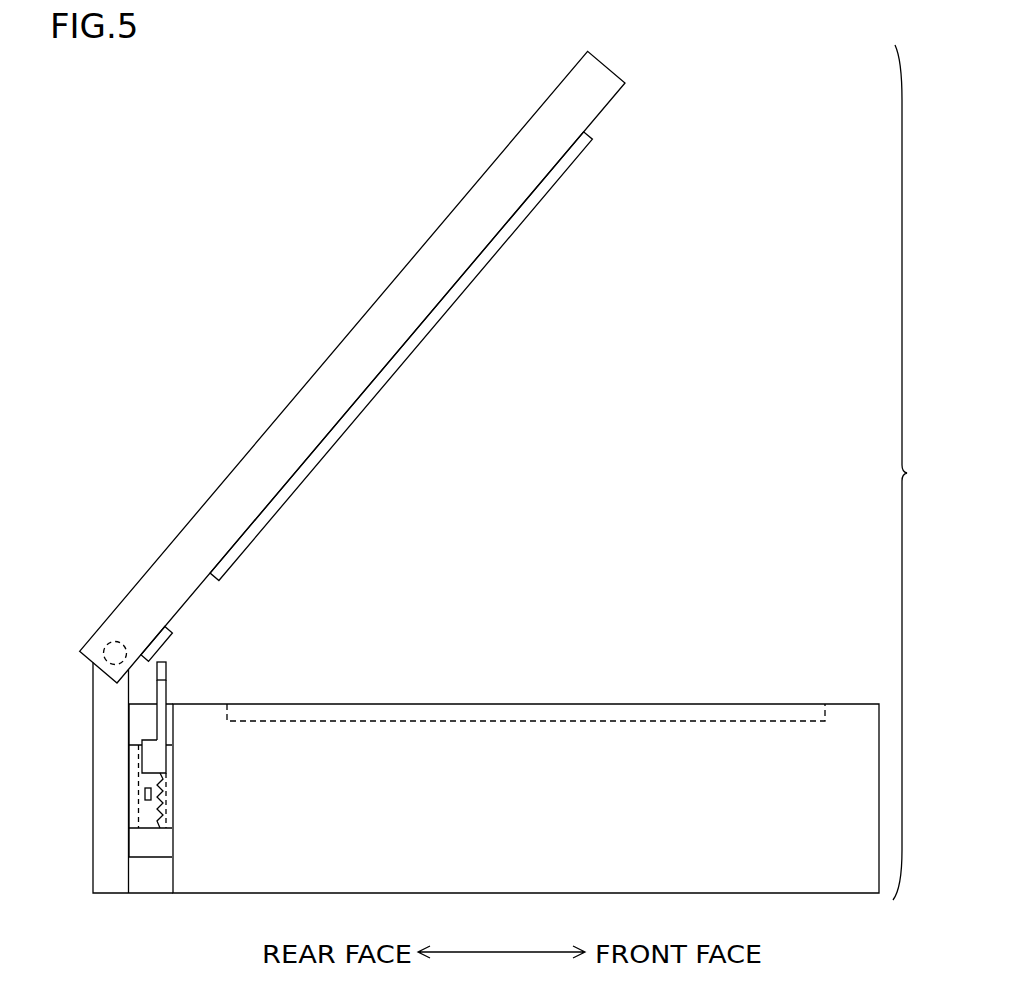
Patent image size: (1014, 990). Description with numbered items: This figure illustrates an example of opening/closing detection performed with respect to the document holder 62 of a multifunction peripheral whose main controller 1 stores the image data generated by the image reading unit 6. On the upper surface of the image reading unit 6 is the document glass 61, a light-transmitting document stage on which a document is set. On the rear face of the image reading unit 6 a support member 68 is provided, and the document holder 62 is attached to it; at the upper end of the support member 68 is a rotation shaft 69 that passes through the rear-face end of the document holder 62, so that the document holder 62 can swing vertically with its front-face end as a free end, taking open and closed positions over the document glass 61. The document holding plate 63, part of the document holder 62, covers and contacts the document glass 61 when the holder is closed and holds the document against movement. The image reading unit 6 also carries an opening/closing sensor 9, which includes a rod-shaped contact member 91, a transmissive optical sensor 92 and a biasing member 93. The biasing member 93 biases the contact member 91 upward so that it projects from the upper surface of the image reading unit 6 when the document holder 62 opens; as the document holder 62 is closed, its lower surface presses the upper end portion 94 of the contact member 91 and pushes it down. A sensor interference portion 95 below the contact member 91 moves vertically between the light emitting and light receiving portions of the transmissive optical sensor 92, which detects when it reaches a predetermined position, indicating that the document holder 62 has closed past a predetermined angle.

The main controller 1 is at (858, 698).
The image reading unit 6 is at (909, 472).
The opening/closing sensor 9 is at (184, 777).
The document glass 61 is at (607, 702).
The document holder 62 is at (337, 362).
The document holding plate 63 is at (450, 302).
The support member 68 is at (112, 694).
The rotation shaft 69 is at (110, 650).
The contact member 91 is at (162, 695).
The transmissive optical sensor 92 is at (143, 794).
The biasing member 93 is at (168, 807).
The upper end portion 94 is at (167, 670).
The sensor interference portion 95 is at (147, 763).